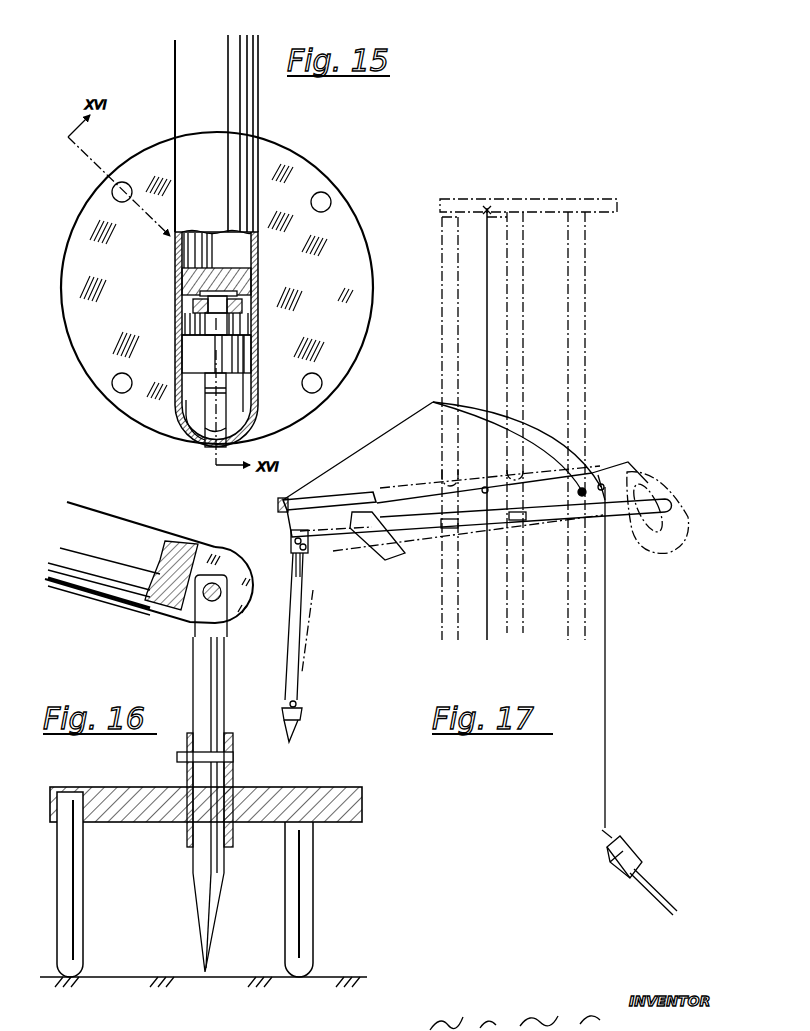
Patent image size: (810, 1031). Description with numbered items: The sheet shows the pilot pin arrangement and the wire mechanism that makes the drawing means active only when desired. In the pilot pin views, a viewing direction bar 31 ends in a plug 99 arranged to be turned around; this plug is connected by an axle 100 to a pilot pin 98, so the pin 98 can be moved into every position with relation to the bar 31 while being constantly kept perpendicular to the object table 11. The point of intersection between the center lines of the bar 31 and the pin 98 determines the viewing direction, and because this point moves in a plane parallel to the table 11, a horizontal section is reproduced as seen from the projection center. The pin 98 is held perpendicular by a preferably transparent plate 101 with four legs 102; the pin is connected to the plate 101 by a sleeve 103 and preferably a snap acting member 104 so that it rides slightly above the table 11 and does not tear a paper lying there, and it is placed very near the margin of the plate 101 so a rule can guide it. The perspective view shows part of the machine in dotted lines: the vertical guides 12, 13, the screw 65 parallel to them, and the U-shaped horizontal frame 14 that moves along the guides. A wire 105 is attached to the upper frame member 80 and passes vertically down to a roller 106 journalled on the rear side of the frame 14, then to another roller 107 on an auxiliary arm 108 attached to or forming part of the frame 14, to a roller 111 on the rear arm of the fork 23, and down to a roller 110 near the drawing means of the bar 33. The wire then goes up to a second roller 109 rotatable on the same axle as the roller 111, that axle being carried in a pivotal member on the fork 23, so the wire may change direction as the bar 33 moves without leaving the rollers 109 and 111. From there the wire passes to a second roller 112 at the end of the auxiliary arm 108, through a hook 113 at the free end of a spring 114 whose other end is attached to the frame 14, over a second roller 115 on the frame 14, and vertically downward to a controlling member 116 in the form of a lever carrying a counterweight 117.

In FIG. 16, the plane (object table) 11 is at (347, 977).
In FIG. 17, the vertical guide 12 is at (450, 265).
In FIG. 17, the vertical guide 13 is at (580, 268).
In FIG. 17, the U-shaped horizontal frame 14 is at (575, 470).
In FIG. 17, the fork 23 is at (372, 560).
In FIG. 15, the viewing direction bar 31 is at (215, 115).
In FIG. 16, the viewing direction bar 31 is at (118, 580).
In FIG. 17, the bar 33 is at (305, 635).
In FIG. 17, the screw 65 is at (515, 293).
In FIG. 17, the upper frame member 80 is at (545, 205).
In FIG. 16, the pilot pin 98 is at (213, 855).
In FIG. 16, the plug 99 is at (150, 610).
In FIG. 16, the axle 100 is at (207, 598).
In FIG. 15, the transparent plate 101 is at (345, 227).
In FIG. 16, the transparent plate 101 is at (362, 805).
In FIG. 16, the legs 102 is at (83, 895).
In FIG. 16, the sleeve 103 is at (233, 752).
In FIG. 16, the snap acting member 104 is at (177, 757).
In FIG. 17, the wire 105 is at (488, 230).
In FIG. 17, the roller 106 is at (485, 493).
In FIG. 17, the roller 107 is at (288, 512).
In FIG. 17, the auxiliary arm 108 is at (337, 503).
In FIG. 17, the second roller 109 is at (308, 545).
In FIG. 17, the roller 110 is at (300, 712).
In FIG. 17, the roller 111 is at (302, 550).
In FIG. 17, the second roller 112 is at (280, 498).
In FIG. 17, the hook 113 is at (433, 402).
In FIG. 17, the spring 114 is at (533, 433).
In FIG. 17, the second roller 115 is at (603, 485).
In FIG. 17, the controlling member 116 is at (650, 895).
In FIG. 17, the counterweight 117 is at (618, 852).